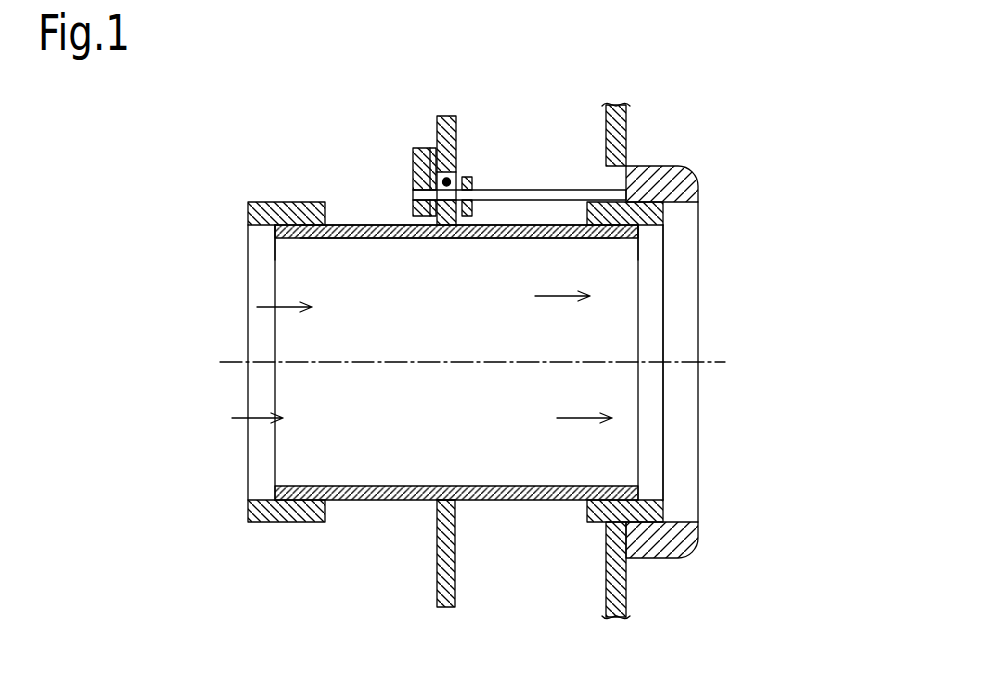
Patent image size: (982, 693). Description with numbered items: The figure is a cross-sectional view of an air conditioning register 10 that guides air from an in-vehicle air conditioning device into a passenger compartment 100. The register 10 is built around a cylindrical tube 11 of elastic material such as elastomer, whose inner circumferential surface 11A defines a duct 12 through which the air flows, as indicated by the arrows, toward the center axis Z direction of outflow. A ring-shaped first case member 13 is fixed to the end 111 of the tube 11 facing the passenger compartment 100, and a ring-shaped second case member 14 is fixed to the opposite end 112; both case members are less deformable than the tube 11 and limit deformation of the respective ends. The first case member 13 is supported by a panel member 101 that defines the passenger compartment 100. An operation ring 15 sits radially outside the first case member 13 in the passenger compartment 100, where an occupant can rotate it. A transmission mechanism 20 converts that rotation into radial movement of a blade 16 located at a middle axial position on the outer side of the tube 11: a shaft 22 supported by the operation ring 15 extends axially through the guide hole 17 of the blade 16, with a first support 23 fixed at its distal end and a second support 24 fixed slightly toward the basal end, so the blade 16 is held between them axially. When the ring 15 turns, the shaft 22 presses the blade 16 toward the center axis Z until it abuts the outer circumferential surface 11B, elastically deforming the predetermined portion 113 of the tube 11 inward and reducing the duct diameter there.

The air conditioning register 10 is at (189, 172).
The tube 11 is at (364, 502).
The inner circumferential surface 11A is at (352, 240).
The outer circumferential surface 11B is at (349, 225).
The end 111 is at (663, 228).
The end 112 is at (275, 228).
The predetermined portion 113 is at (448, 500).
The duct 12 is at (422, 357).
The first case member 13 is at (663, 512).
The second case member 14 is at (249, 510).
The operation ring 15 is at (688, 552).
The blade 16 is at (446, 116).
The guide hole 17 is at (448, 180).
The transmission mechanism 20 is at (397, 113).
The shaft 22 is at (570, 190).
The first support 23 is at (413, 152).
The second support 24 is at (468, 178).
The passenger compartment 100 is at (720, 360).
The panel member 101 is at (620, 120).
The center axis Z is at (708, 352).